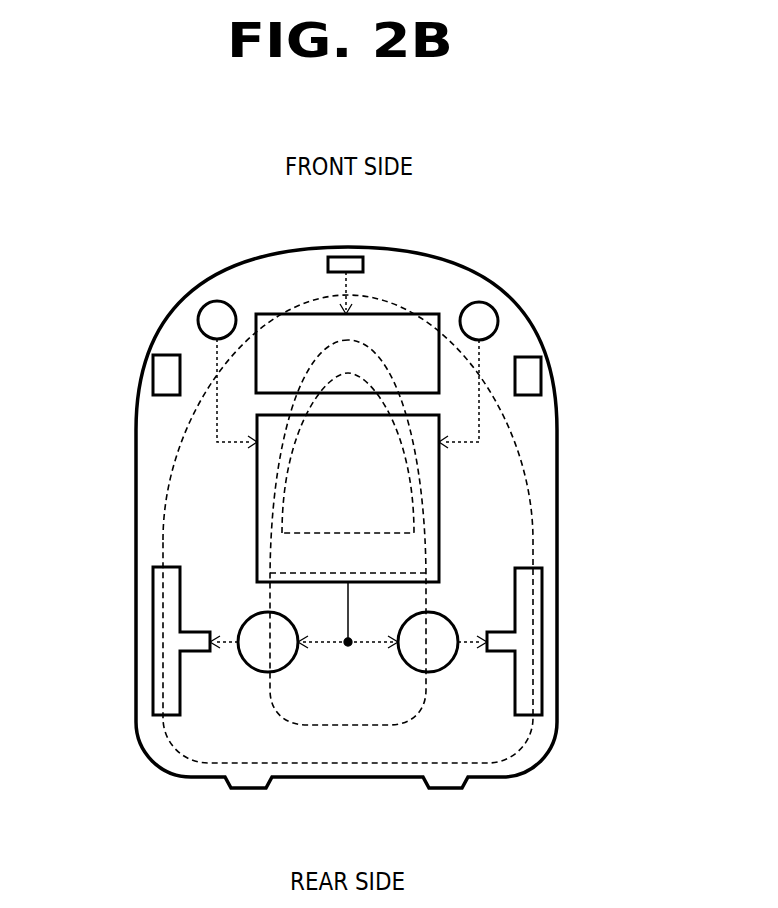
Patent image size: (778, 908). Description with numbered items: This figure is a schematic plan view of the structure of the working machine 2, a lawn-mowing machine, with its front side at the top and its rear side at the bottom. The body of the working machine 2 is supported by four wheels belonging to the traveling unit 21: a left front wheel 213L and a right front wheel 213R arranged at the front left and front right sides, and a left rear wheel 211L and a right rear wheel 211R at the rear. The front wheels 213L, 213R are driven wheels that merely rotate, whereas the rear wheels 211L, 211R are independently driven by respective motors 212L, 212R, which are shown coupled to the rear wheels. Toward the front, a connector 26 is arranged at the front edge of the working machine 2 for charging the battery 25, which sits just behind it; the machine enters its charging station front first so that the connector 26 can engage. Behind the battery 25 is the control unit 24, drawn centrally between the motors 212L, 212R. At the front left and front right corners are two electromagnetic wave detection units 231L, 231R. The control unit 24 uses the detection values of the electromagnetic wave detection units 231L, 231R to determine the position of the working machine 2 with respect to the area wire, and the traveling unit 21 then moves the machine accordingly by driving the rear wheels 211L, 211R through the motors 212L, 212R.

The working machine 2 is at (230, 264).
The traveling unit 21 is at (213, 723).
The control unit 24 is at (257, 510).
The battery 25 is at (435, 313).
The connector 26 is at (363, 264).
The electromagnetic wave detection unit 231L is at (199, 314).
The electromagnetic wave detection unit 231R is at (493, 305).
The left front wheel 213L is at (152, 375).
The right front wheel 213R is at (542, 377).
The left rear wheel 211L is at (153, 672).
The right rear wheel 211R is at (542, 650).
The motor 212L is at (263, 672).
The motor 212R is at (435, 672).